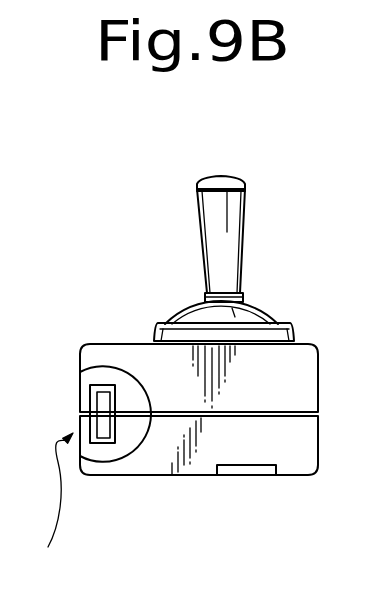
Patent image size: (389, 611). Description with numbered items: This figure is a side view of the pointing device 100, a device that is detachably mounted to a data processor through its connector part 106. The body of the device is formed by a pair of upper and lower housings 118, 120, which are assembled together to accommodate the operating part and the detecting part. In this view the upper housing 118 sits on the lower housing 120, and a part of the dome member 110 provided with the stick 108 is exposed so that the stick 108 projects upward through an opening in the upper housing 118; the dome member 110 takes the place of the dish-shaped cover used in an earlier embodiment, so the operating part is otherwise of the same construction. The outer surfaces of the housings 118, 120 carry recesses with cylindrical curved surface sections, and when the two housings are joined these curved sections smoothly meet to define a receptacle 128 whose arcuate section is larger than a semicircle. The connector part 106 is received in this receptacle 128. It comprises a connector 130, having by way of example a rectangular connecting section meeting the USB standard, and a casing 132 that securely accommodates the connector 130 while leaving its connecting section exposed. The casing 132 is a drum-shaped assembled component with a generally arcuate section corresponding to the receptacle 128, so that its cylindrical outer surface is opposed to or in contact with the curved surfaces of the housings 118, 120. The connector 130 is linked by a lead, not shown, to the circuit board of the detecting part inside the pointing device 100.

The pointing device 100 is at (151, 170).
The connector part 106 is at (47, 509).
The stick 108 is at (229, 220).
The dome member 110 is at (250, 307).
The upper housing 118 is at (297, 375).
The lower housing 120 is at (295, 450).
The receptacle 128 is at (138, 430).
The connector 130 is at (104, 428).
The casing 132 is at (125, 388).